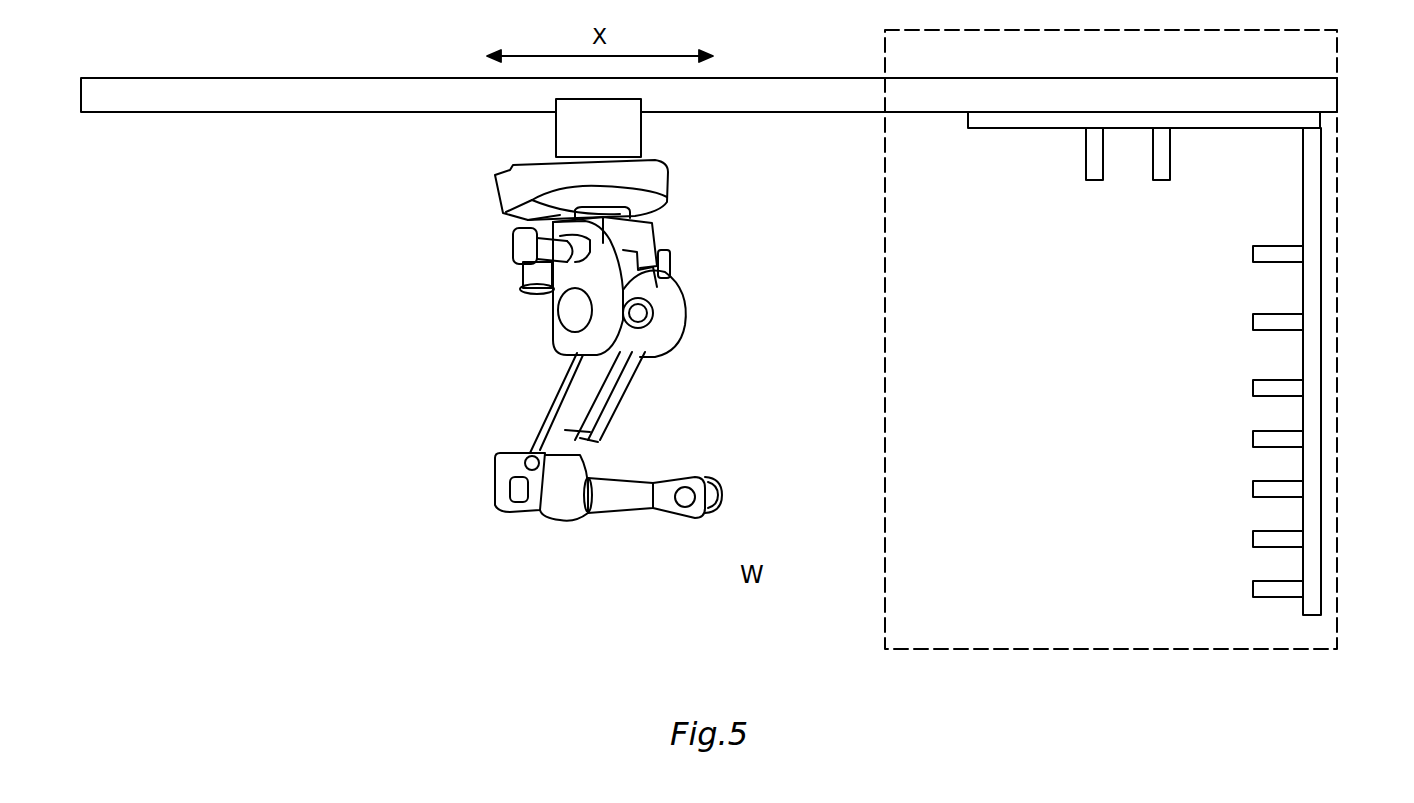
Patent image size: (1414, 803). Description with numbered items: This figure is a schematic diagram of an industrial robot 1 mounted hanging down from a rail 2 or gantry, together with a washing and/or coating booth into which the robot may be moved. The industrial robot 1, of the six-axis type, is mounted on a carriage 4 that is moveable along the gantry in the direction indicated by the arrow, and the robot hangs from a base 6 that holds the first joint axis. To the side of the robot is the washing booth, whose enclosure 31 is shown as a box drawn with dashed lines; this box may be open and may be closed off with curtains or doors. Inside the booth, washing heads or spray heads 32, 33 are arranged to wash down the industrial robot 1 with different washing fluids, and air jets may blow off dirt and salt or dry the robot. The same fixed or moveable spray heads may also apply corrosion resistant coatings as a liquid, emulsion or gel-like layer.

The industrial robot 1 is at (522, 357).
The rail 2 is at (135, 97).
The carriage 4 is at (553, 124).
The base 6 is at (503, 192).
The enclosure 31 is at (922, 628).
The spray head 32 is at (1173, 156).
The spray head 33 is at (1280, 255).